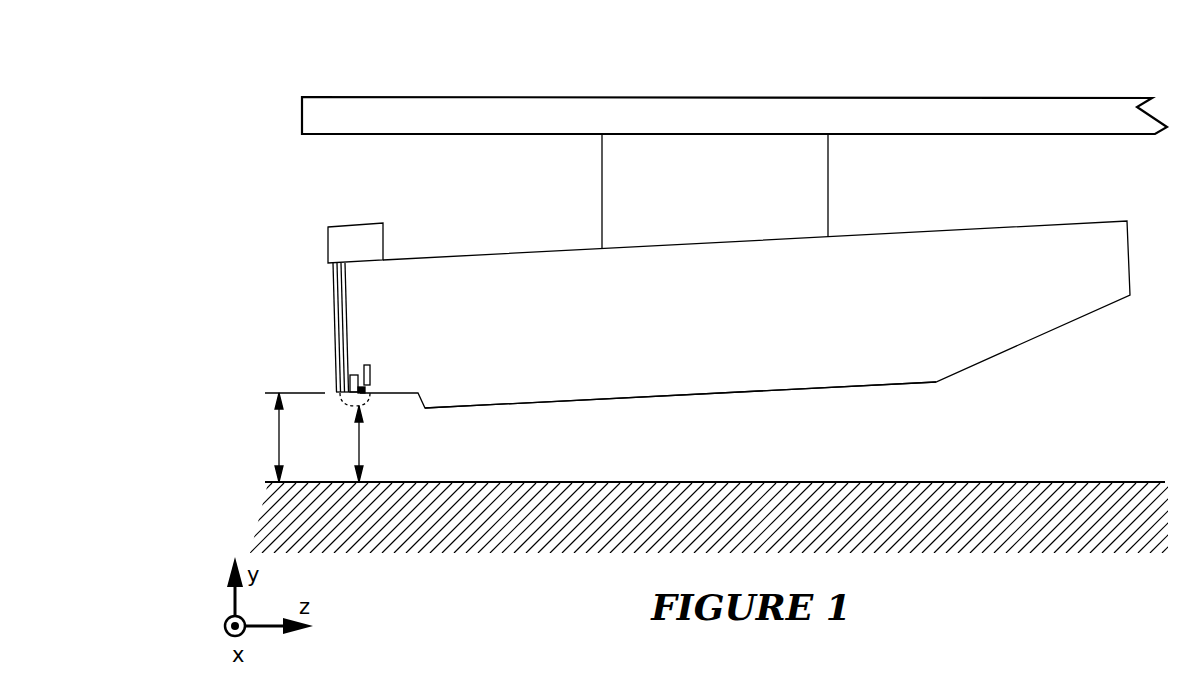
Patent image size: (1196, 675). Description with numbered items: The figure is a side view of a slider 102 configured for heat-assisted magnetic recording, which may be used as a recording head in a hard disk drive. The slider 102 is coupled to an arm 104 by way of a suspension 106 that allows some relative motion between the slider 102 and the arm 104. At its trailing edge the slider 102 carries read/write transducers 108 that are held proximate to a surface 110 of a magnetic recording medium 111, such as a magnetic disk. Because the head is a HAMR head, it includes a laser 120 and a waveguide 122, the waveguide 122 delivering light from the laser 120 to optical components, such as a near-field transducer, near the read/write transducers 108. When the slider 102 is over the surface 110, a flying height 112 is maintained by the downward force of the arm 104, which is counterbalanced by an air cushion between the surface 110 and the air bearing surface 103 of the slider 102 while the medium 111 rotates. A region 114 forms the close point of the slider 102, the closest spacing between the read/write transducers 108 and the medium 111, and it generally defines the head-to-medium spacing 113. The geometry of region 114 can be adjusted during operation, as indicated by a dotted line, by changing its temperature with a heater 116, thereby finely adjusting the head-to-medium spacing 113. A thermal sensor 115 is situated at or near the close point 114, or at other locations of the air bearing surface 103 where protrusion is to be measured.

The slider 102 is at (993, 237).
The air bearing surface 103 is at (548, 405).
The arm 104 is at (1060, 107).
The suspension 106 is at (827, 178).
The read/write transducers 108 is at (352, 377).
The surface 110 is at (998, 482).
The magnetic recording medium 111 is at (1015, 537).
The flying height 112 is at (273, 437).
The head-to-medium spacing 113 is at (335, 444).
The region 114 is at (367, 400).
The thermal sensor 115 is at (365, 390).
The heater 116 is at (367, 365).
The laser 120 is at (357, 235).
The waveguide 122 is at (338, 295).